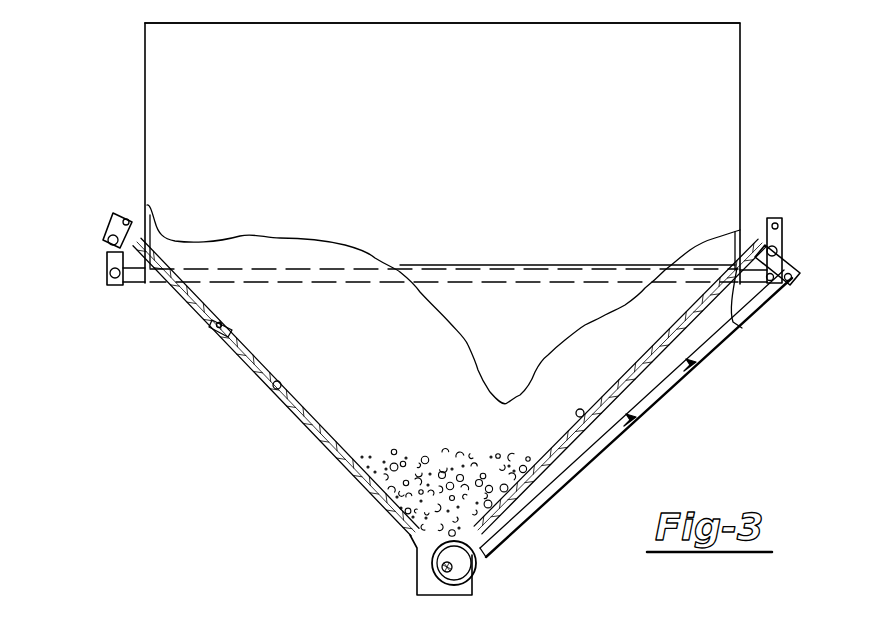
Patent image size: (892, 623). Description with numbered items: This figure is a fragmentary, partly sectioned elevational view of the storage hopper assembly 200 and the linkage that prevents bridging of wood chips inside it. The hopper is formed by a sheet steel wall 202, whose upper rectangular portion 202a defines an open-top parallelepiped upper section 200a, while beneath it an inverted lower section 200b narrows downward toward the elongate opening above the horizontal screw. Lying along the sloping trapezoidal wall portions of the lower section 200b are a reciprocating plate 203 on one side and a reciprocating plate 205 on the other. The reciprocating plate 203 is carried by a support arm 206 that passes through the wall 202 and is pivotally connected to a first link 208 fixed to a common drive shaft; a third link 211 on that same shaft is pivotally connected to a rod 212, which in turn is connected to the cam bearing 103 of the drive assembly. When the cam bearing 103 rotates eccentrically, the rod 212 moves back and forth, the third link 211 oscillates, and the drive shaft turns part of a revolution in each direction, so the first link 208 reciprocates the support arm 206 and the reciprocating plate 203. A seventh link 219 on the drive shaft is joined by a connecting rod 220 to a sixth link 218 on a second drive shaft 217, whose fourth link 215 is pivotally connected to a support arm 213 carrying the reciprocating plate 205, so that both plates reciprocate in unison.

The storage hopper assembly 200 is at (838, 22).
The wall 202 is at (740, 105).
The upper rectangular portion 202a is at (145, 82).
The upper section 200a is at (308, 264).
The lower section 200b is at (418, 394).
The fourth link 215 is at (120, 216).
The second drive shaft 217 is at (105, 240).
The sixth link 218 is at (107, 265).
The support arm 213 is at (215, 330).
The reciprocating plate 205 is at (272, 390).
The support arm 206 is at (680, 318).
The reciprocating plate 203 is at (583, 420).
The rod 212 is at (710, 352).
The connecting rod 220 is at (735, 323).
The first link 208 is at (778, 224).
The seventh link 219 is at (793, 265).
The third link 211 is at (800, 278).
The cam bearing 103 is at (477, 570).